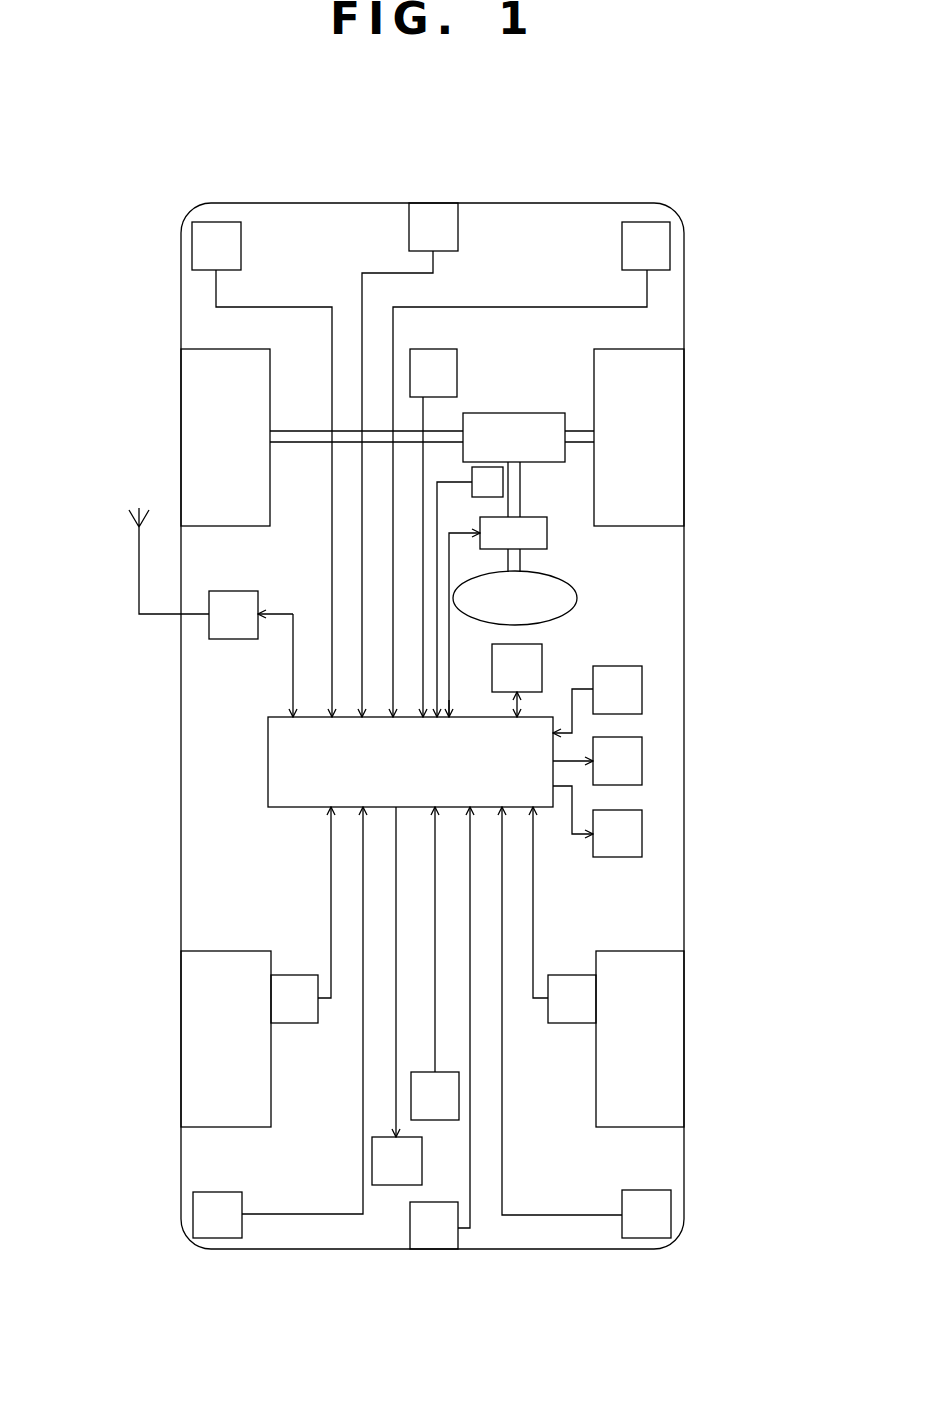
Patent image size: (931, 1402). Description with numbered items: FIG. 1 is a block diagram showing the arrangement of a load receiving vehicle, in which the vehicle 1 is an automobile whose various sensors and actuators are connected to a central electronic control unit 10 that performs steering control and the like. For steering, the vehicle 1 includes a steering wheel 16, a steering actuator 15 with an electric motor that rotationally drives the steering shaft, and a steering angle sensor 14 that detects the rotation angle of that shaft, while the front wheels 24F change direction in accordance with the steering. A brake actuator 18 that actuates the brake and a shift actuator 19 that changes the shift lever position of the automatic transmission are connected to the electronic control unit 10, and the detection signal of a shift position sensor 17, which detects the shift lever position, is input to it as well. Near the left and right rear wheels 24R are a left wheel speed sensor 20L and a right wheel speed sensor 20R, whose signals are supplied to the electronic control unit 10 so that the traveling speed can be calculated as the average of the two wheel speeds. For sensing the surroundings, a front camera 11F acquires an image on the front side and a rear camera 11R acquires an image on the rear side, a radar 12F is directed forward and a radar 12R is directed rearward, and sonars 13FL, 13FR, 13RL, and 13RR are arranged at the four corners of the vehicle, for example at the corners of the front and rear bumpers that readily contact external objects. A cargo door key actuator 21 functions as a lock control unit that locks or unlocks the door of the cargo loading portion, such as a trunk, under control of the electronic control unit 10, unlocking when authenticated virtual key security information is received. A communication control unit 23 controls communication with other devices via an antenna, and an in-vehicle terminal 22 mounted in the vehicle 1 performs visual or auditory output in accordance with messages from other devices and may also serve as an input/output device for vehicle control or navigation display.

The vehicle 1 is at (590, 203).
The electronic control unit 10 is at (268, 760).
The front camera 11F is at (457, 373).
The rear camera 11R is at (459, 1090).
The radar 12F is at (458, 230).
The radar 12R is at (433, 1225).
The sonar 13FL is at (192, 247).
The sonar 13FR is at (670, 243).
The sonar 13RL is at (193, 1218).
The sonar 13RR is at (671, 1212).
The steering angle sensor 14 is at (503, 478).
The steering actuator 15 is at (547, 533).
The steering wheel 16 is at (577, 594).
The shift position sensor 17 is at (642, 688).
The brake actuator 18 is at (642, 753).
The shift actuator 19 is at (642, 828).
The left wheel speed sensor 20L is at (295, 975).
The right wheel speed sensor 20R is at (573, 975).
The cargo door key actuator 21 is at (372, 1165).
The in-vehicle terminal 22 is at (542, 648).
The communication control unit 23 is at (236, 591).
The front wheels 24F is at (668, 400).
The rear wheels 24R is at (653, 1033).